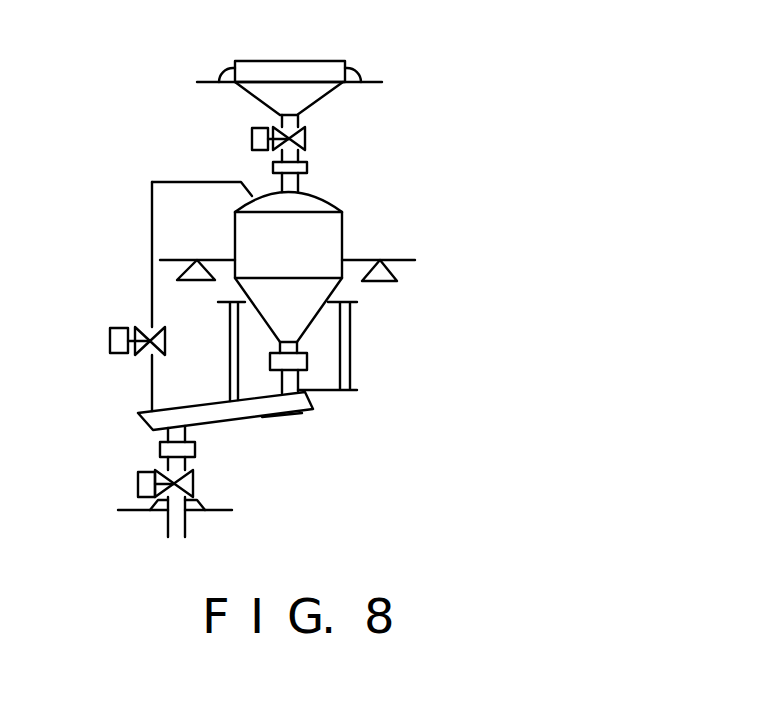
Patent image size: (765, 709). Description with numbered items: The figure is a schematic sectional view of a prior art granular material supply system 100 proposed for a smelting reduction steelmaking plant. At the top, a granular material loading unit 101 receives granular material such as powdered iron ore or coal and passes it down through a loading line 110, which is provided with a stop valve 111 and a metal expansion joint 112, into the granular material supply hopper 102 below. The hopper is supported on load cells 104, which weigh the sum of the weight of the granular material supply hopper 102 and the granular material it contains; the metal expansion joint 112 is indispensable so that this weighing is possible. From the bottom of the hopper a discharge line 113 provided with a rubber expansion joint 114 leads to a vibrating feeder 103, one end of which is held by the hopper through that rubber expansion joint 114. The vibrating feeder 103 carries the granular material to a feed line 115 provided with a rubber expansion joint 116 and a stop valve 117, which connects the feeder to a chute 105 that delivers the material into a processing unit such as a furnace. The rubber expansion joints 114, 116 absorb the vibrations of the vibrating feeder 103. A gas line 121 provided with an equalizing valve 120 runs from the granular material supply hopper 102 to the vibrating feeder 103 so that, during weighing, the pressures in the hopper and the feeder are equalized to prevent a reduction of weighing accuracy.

The granular material supply system 100 is at (440, 184).
The granular material loading unit 101 is at (335, 62).
The loading line 110 is at (297, 120).
The stop valve 111 is at (302, 150).
The metal expansion joint 112 is at (273, 164).
The granular material supply hopper 102 is at (343, 223).
The load cells 104 is at (185, 283).
The vibrating feeder 103 is at (297, 416).
The discharge line 113 is at (288, 384).
The rubber expansion joint 114 is at (272, 362).
The gas line 121 is at (150, 213).
The equalizing valve 120 is at (140, 328).
The rubber expansion joint 116 is at (162, 446).
The feed line 115 is at (188, 465).
The stop valve 117 is at (193, 498).
The chute 105 is at (168, 522).